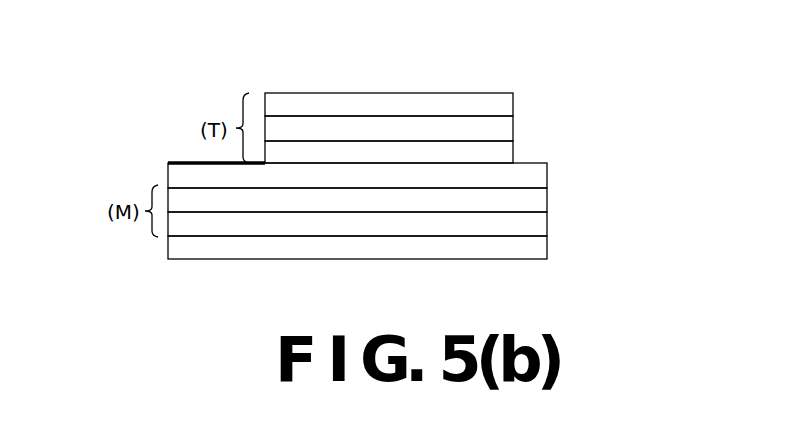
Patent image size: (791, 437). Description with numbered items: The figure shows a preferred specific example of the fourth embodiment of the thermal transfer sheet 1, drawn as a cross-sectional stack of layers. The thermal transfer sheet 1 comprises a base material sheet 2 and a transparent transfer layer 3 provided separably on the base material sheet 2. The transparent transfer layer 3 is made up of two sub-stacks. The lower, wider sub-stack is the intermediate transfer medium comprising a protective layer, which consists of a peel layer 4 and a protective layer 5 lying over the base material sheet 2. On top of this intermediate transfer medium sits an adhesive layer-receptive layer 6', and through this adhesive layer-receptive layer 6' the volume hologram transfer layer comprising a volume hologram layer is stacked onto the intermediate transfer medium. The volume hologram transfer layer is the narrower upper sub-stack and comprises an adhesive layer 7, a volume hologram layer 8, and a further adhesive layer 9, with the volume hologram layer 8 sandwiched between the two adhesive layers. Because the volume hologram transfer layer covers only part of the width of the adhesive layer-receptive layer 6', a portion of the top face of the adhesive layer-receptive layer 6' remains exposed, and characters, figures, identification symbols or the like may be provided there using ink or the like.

The thermal transfer sheet 1 is at (397, 75).
The base material sheet 2 is at (538, 248).
The transparent transfer layer 3 is at (624, 88).
The peel layer 4 is at (538, 222).
The protective layer 5 is at (538, 197).
The adhesive layer-receptive layer 6' is at (385, 174).
The adhesive layer 7 is at (500, 149).
The volume hologram layer 8 is at (500, 127).
The adhesive layer 9 is at (495, 99).